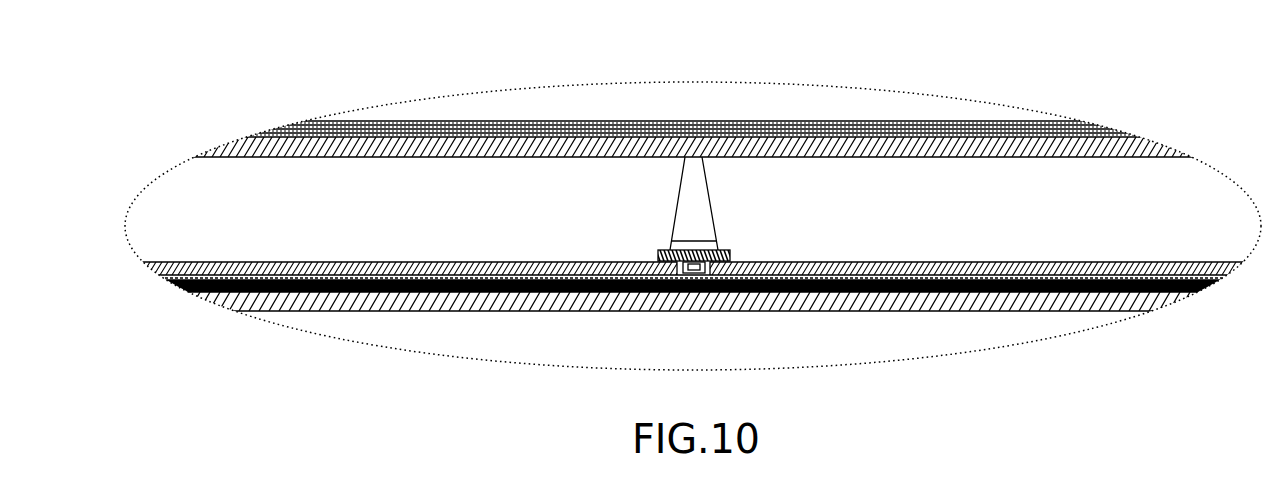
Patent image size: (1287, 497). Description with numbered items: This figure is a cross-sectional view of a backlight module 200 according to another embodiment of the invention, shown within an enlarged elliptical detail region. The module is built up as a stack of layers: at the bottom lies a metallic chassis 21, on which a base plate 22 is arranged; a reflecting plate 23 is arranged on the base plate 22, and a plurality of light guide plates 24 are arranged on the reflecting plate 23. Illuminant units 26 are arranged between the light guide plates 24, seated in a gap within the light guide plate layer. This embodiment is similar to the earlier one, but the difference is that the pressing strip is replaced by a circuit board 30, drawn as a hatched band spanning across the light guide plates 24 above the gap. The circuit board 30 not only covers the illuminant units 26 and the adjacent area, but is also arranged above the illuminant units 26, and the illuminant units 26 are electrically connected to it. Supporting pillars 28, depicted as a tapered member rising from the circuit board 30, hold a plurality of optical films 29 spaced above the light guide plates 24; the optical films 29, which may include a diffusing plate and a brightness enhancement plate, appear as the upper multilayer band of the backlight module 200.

The backlight module 200 is at (612, 94).
The optical films 29 is at (900, 109).
The supporting pillars 28 is at (704, 205).
The circuit board 30 is at (722, 247).
The illuminant units 26 is at (680, 261).
The light guide plates 24 is at (940, 262).
The reflecting plate 23 is at (1102, 262).
The base plate 22 is at (1196, 288).
The chassis 21 is at (1090, 299).